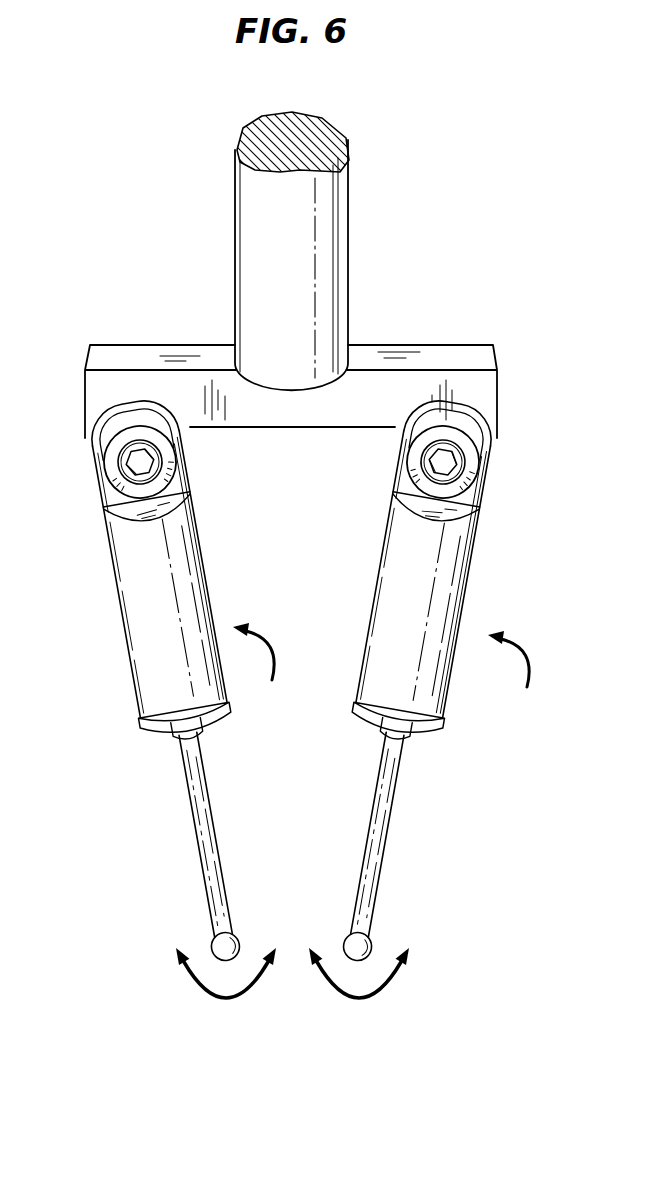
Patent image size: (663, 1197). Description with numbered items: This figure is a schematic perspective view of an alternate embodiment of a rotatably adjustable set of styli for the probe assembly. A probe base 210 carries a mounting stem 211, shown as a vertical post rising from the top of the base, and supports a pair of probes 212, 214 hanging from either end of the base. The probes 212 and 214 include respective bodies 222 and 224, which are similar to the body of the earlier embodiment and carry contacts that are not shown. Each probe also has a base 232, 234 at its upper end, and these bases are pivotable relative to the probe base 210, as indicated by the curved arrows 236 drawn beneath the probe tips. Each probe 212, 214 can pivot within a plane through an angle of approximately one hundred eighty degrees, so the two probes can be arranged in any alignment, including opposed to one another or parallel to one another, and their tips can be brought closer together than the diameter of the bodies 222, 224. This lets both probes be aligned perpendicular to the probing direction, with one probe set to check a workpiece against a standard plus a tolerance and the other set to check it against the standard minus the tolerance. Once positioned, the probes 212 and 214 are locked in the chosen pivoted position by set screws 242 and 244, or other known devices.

The mounting stem 211 is at (348, 243).
The probe base 210 is at (450, 358).
The body 222 is at (212, 597).
The body 224 is at (465, 607).
The set screw 242 is at (115, 448).
The set screw 244 is at (468, 448).
The base 232 is at (177, 482).
The base 234 is at (472, 487).
The probe 212 is at (261, 669).
The probe 214 is at (516, 677).
The curved arrows 236 is at (229, 998).